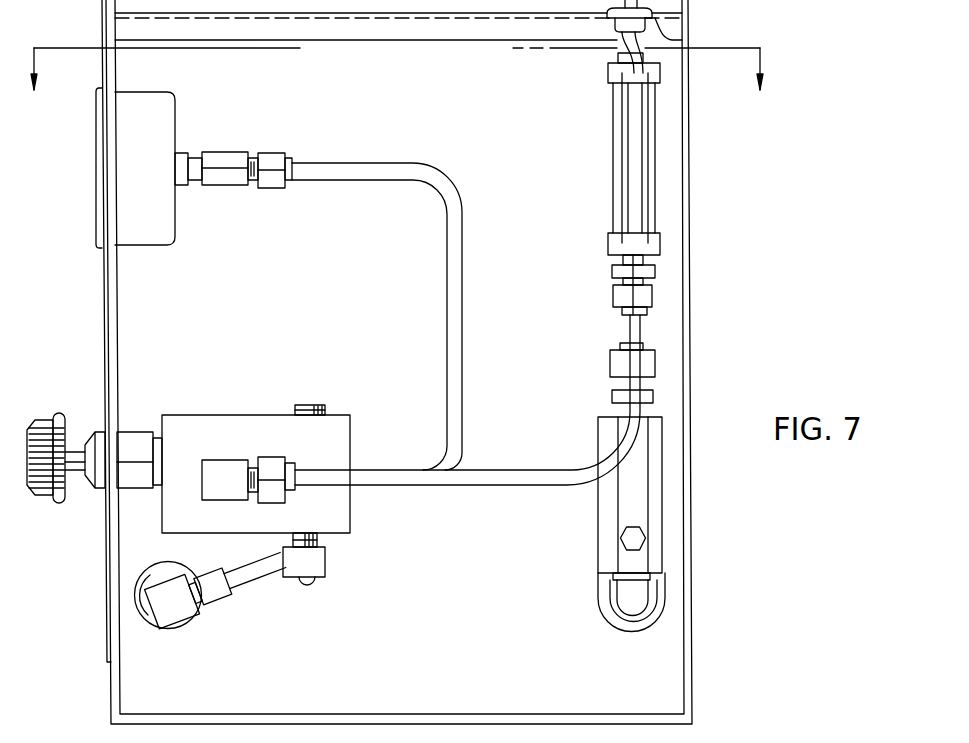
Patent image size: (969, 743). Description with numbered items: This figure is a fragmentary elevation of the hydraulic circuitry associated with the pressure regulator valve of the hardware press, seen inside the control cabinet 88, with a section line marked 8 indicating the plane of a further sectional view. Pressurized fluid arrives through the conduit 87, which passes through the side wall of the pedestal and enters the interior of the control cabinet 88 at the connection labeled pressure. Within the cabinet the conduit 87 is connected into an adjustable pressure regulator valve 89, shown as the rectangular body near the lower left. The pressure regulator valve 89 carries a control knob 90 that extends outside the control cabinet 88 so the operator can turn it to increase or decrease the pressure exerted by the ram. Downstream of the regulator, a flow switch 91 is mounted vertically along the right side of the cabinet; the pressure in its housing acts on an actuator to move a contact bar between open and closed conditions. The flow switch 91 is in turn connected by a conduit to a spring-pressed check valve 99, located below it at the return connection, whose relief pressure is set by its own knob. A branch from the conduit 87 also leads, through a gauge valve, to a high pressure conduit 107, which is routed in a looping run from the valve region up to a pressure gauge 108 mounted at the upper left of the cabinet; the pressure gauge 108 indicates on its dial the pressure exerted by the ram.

The section line 8- 8 is at (397, 86).
The conduit 87 is at (258, 577).
The control cabinet 88 is at (683, 203).
The adjustable pressure regulator valve 89 is at (232, 430).
The control knob 90 is at (38, 428).
The flow switch 91 is at (633, 140).
The spring-pressed check valve 99 is at (630, 495).
The high pressure conduit 107 is at (455, 241).
The pressure gauge 108 is at (160, 110).